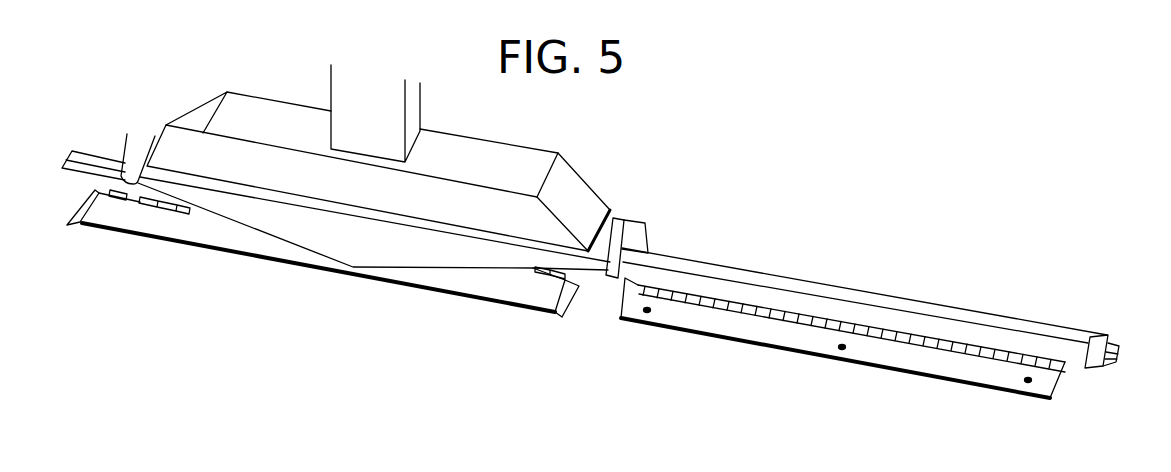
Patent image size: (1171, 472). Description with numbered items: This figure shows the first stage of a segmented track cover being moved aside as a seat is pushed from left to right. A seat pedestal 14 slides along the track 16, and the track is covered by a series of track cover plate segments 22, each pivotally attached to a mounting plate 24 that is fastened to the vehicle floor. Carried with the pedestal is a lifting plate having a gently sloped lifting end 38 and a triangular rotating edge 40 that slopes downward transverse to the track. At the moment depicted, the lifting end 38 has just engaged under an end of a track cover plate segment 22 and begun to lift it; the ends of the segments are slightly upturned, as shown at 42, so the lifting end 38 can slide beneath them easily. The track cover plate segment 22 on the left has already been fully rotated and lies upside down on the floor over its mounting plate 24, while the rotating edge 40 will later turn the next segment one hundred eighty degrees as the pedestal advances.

The pedestal 14 is at (248, 108).
The track 16 is at (1113, 343).
The track cover plate segment 22 is at (535, 293).
The mounting plate 24 is at (947, 367).
The lifting end 38 is at (141, 150).
The rotating edge 40 is at (373, 252).
The upturned end 42 is at (612, 276).